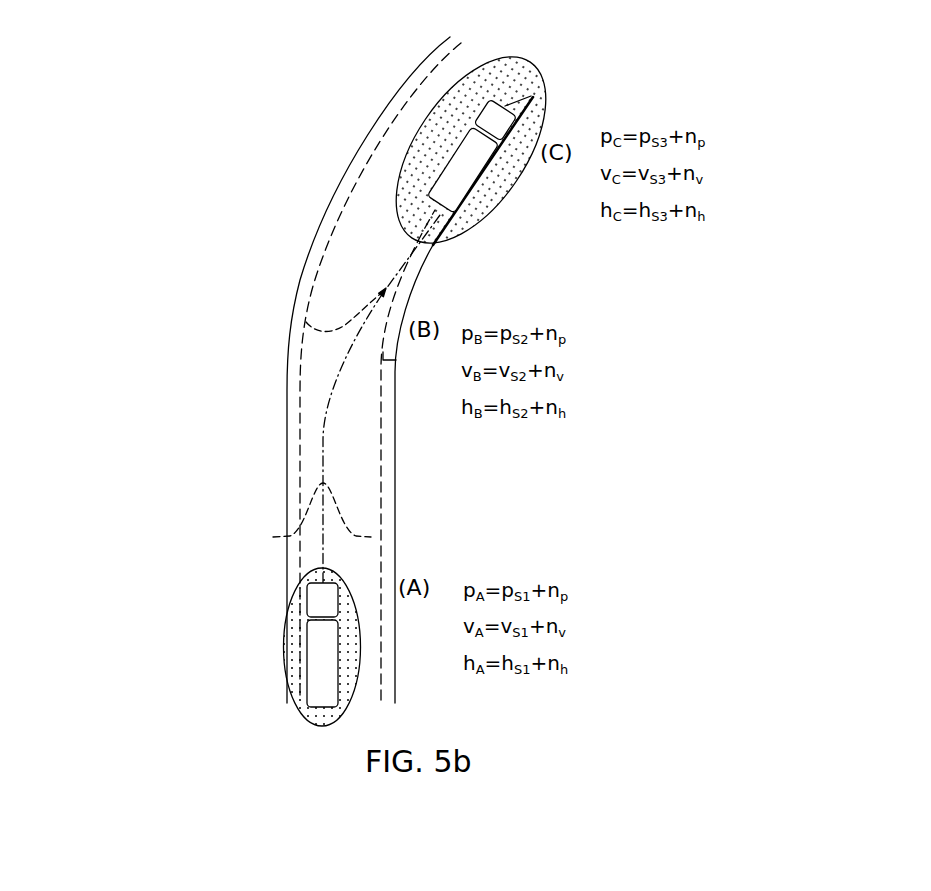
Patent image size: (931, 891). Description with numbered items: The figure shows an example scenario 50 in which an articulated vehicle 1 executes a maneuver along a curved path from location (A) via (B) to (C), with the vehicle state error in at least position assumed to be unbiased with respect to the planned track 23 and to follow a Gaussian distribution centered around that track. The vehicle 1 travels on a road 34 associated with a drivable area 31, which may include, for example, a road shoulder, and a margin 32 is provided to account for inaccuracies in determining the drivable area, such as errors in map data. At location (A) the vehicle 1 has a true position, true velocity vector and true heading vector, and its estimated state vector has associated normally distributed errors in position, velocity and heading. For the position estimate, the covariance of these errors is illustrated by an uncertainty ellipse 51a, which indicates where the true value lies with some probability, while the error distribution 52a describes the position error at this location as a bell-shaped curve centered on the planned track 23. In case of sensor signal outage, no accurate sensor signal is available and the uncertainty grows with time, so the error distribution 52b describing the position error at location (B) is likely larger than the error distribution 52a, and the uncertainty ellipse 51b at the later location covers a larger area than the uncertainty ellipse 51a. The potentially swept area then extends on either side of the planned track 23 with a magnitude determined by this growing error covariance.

The example scenario 50 is at (176, 175).
The articulated vehicle 1 is at (322, 688).
The drivable area 31 is at (379, 393).
The margin 32 is at (324, 371).
The road 34 is at (368, 368).
The planned track 23 is at (323, 441).
The uncertainty ellipse 51a is at (284, 597).
The uncertainty ellipse 51b is at (525, 62).
The error distribution 52a is at (303, 520).
The error distribution 52b is at (356, 316).